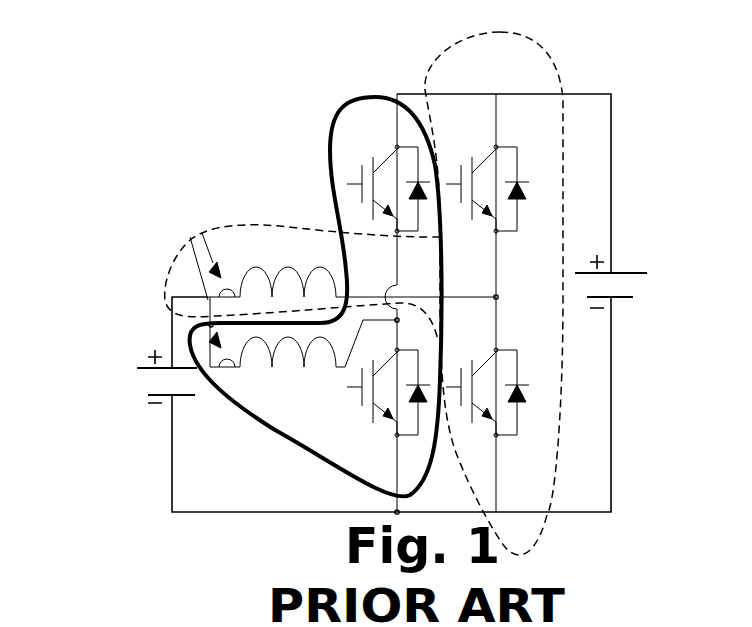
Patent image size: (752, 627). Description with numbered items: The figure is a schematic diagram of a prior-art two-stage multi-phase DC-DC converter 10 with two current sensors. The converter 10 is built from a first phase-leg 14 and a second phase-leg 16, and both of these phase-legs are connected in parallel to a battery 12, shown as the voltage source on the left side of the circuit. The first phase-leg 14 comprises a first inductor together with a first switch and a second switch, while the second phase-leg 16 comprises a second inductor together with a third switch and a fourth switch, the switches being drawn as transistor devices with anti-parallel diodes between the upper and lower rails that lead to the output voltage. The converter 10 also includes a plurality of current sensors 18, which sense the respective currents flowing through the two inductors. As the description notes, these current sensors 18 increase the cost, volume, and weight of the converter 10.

The 2-stage multi-phase DC-DC converter 10 is at (192, 80).
The battery 12 is at (123, 352).
The first phase-leg 14 is at (567, 69).
The second phase-leg 16 is at (335, 125).
The current sensors 18 is at (193, 231).